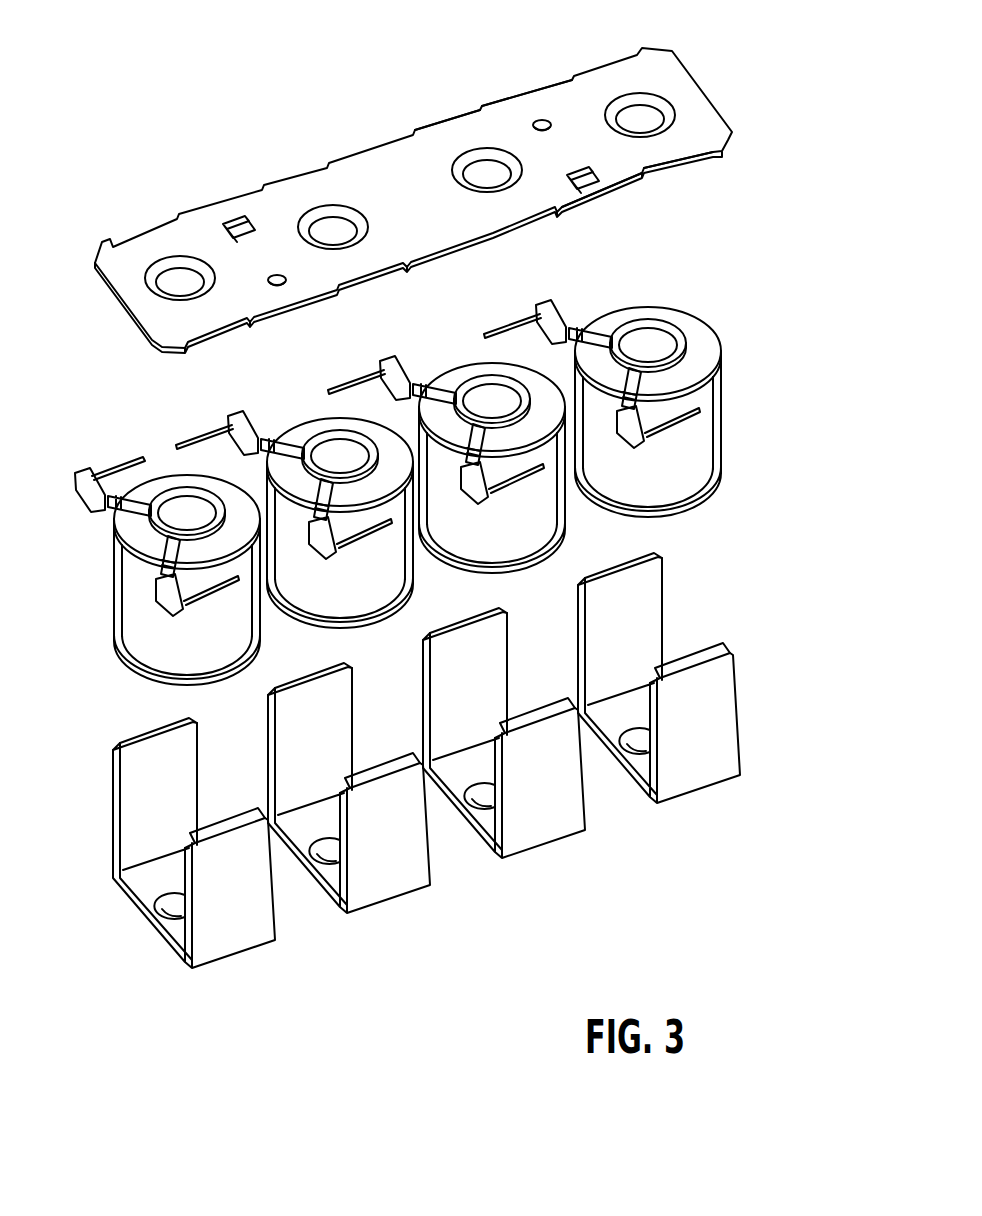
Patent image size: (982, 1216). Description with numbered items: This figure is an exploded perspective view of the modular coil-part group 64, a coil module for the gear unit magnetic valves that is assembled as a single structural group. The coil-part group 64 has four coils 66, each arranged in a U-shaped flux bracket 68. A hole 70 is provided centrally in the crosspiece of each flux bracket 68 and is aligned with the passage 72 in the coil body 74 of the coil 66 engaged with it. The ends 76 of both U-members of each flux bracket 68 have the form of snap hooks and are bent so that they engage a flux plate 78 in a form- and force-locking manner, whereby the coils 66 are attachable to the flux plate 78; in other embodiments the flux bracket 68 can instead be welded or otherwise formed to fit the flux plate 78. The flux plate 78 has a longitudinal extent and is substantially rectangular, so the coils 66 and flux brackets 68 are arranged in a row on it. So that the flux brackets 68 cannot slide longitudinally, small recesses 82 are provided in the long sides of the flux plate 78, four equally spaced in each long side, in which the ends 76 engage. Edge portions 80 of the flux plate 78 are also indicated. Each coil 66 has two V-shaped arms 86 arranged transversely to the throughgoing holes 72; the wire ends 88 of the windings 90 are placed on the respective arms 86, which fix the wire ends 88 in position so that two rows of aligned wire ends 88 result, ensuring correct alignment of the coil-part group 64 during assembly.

The coil-part group 64 is at (800, 379).
The coil 66 is at (700, 455).
The flux bracket 68 is at (713, 753).
The hole 70 is at (632, 757).
The passage 72 is at (670, 335).
The coil body 74 is at (705, 353).
The ends 76 is at (660, 555).
The flux plate 78 is at (570, 100).
The plate edge tab 80 is at (520, 92).
The recesses 82 is at (438, 132).
The arms 86 is at (592, 322).
The wire ends 88 is at (492, 326).
The windings 90 is at (723, 423).